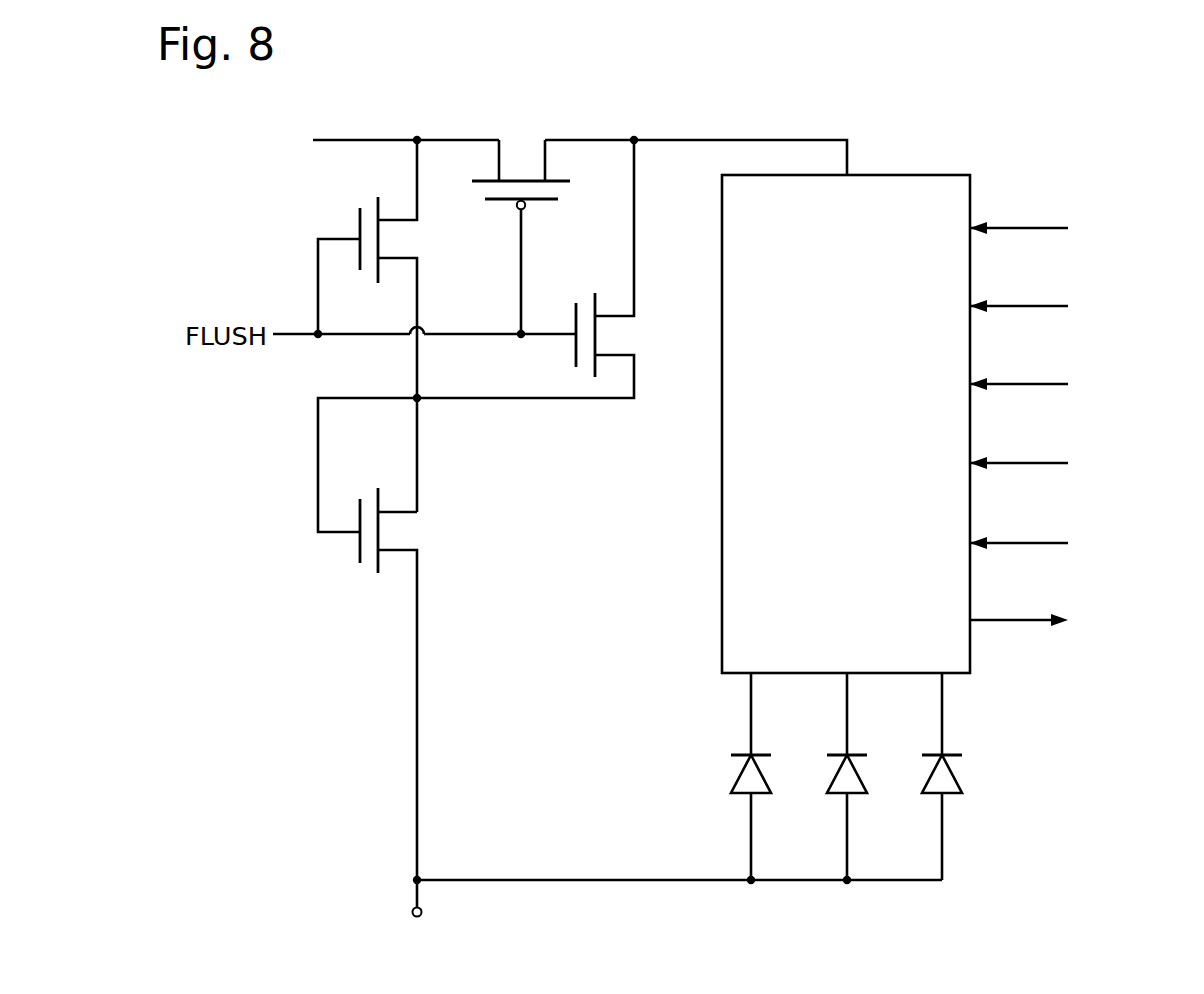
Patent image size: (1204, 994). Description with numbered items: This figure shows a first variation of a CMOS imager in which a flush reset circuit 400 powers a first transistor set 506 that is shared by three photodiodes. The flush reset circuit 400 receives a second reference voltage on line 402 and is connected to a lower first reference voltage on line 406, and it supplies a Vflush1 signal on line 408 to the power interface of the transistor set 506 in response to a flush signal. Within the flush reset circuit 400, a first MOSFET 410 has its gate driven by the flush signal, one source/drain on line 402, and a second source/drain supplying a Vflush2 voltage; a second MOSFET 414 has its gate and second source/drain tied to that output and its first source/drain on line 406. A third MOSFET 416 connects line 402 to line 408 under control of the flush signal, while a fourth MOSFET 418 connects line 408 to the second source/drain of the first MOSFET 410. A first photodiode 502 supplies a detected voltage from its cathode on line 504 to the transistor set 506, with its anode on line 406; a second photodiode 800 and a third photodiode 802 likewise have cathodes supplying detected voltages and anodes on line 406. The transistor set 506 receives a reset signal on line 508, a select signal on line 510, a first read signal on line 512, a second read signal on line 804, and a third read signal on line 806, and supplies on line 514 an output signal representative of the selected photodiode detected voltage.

The flush reset circuit 400 is at (351, 119).
The second reference voltage interface line 402 is at (455, 140).
The first reference voltage interface line 406 is at (417, 893).
The transistor set power interface line 408 is at (745, 140).
The first MOSFET 410 is at (419, 240).
The second MOSFET 414 is at (419, 531).
The third MOSFET 416 is at (514, 143).
The fourth MOSFET 418 is at (630, 334).
The first photodiode 502 is at (735, 779).
The first PD cathode line 504 is at (751, 725).
The first transistor set 506 is at (877, 466).
The reset signal interface line 508 is at (1027, 228).
The select signal interface line 510 is at (1027, 306).
The first read signal interface line 512 is at (1027, 384).
The output signal line 514 is at (1027, 620).
The second photodiode 800 is at (865, 775).
The third photodiode 802 is at (959, 775).
The second read signal interface line 804 is at (1027, 463).
The third read signal interface line 806 is at (1027, 543).